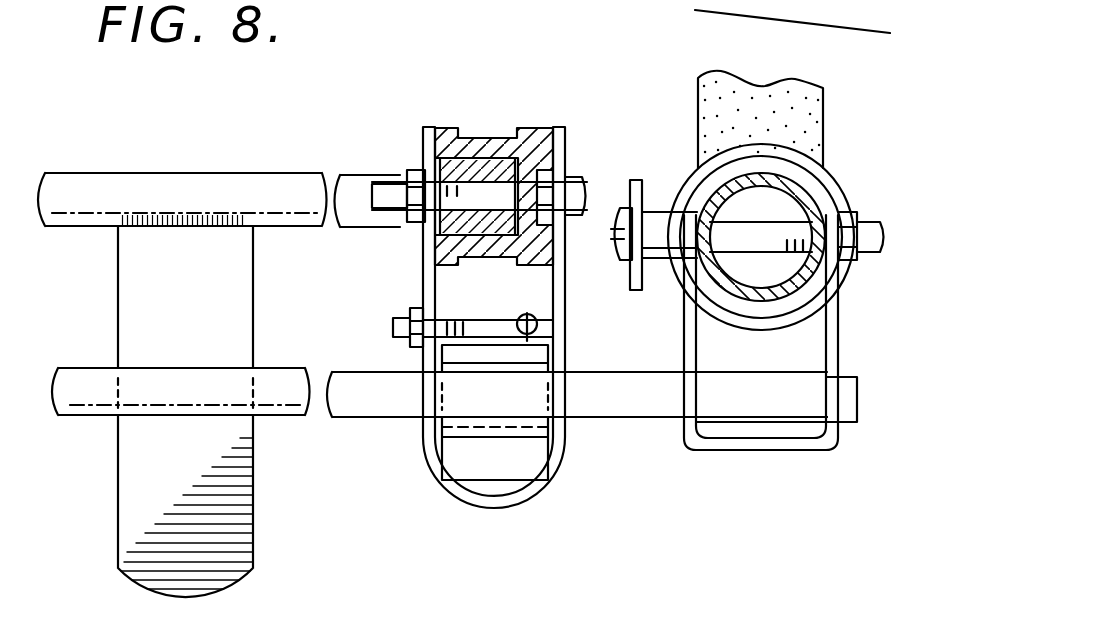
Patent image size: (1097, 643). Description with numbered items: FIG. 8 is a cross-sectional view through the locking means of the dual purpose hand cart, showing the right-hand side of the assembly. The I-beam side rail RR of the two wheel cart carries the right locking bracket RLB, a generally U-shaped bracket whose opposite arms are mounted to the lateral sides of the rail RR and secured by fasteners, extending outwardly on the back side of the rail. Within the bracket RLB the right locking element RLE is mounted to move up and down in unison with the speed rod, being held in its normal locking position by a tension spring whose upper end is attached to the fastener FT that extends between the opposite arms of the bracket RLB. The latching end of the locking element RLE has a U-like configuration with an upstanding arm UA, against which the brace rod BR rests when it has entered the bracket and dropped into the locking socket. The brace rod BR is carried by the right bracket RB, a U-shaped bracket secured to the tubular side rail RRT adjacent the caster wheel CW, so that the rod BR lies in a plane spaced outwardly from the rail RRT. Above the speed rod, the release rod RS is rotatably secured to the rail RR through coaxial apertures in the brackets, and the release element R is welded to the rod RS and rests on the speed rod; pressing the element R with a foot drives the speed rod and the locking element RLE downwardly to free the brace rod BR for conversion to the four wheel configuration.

The release rod RS is at (132, 182).
The release element R is at (135, 492).
The brace rod BR is at (348, 396).
The fastener FT is at (482, 318).
The right side rail RR is at (487, 137).
The right locking bracket RLB is at (573, 147).
The upstanding arm UA is at (538, 355).
The right locking element RLE is at (486, 476).
The caster wheel CW is at (779, 90).
The right tubular side rail RRT is at (782, 176).
The right bracket RB is at (763, 453).